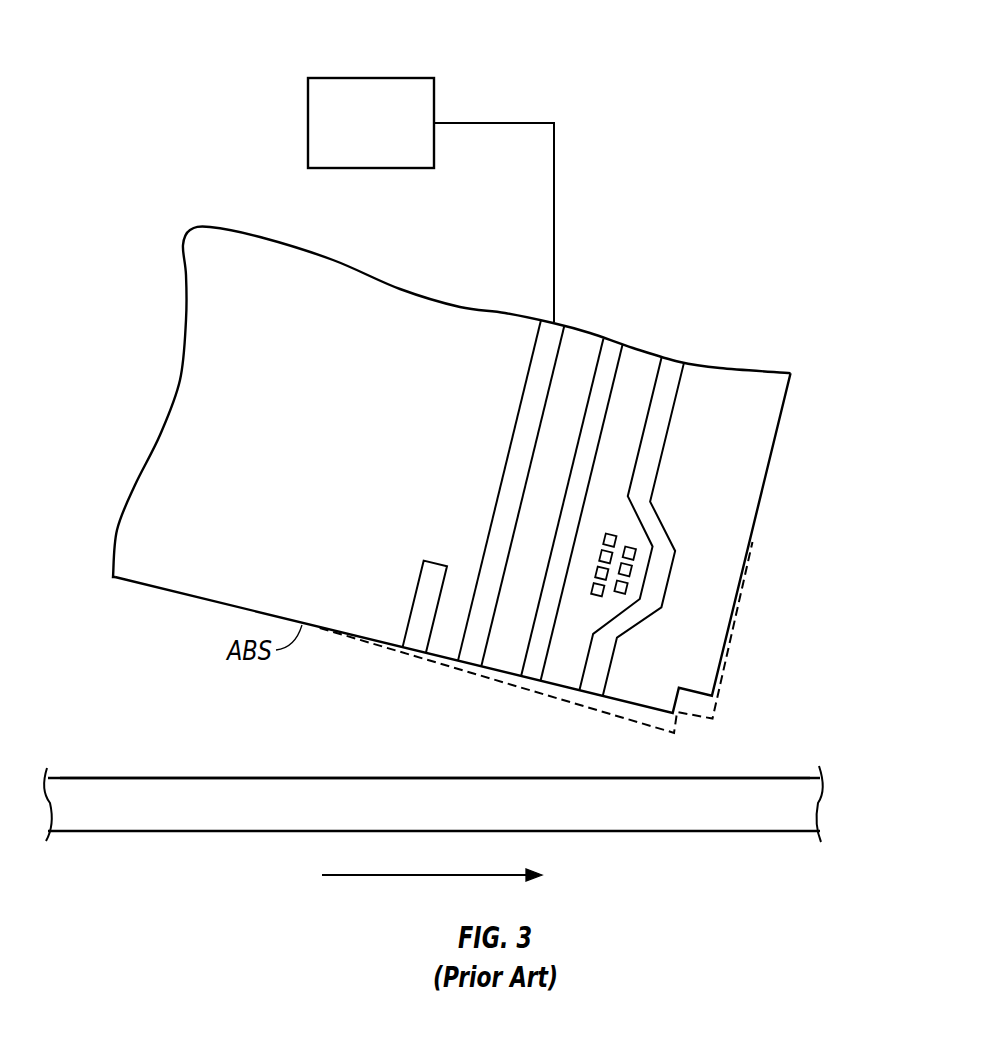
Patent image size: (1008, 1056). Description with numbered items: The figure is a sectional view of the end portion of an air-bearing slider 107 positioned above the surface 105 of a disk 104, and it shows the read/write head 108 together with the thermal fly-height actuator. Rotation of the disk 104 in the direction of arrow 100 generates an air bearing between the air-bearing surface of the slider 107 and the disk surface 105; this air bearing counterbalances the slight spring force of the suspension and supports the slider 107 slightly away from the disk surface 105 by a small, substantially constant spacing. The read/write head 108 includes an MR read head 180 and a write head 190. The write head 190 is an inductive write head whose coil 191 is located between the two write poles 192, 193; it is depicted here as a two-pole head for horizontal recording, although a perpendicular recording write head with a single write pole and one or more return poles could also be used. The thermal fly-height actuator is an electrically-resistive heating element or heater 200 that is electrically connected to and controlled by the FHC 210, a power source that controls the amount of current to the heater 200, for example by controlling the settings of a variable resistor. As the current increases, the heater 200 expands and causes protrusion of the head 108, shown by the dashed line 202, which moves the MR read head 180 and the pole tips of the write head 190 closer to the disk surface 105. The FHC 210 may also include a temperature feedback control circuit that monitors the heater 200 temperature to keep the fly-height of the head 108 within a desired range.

The arrow 100 is at (432, 875).
The disk 104 is at (750, 820).
The disk surface 105 is at (200, 778).
The slider 107 is at (211, 554).
The read/write head 108 is at (681, 308).
The MR read head 180 is at (521, 304).
The write head 190 is at (688, 358).
The coil 191 is at (632, 568).
The write pole 192 is at (533, 674).
The write pole 193 is at (592, 686).
The heater 200 is at (518, 448).
The dashed line 202 is at (445, 667).
The FHC 210 is at (356, 78).